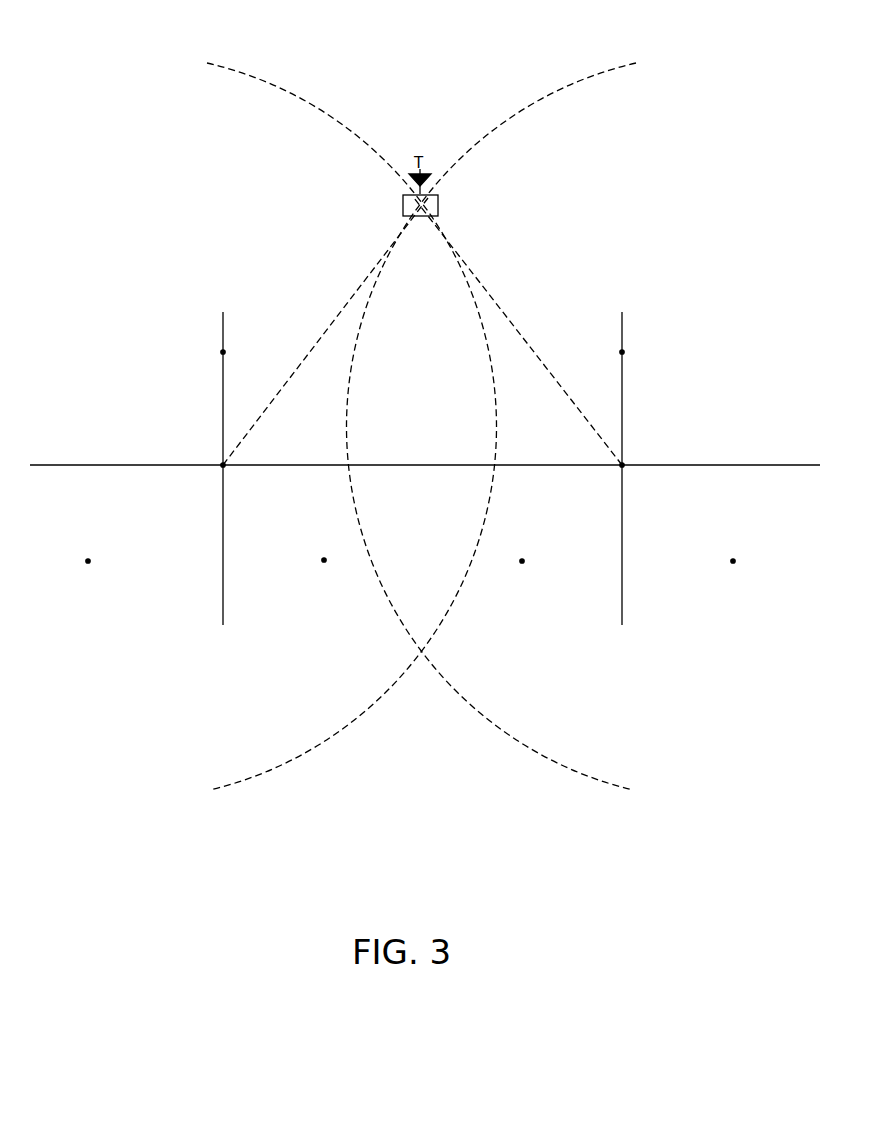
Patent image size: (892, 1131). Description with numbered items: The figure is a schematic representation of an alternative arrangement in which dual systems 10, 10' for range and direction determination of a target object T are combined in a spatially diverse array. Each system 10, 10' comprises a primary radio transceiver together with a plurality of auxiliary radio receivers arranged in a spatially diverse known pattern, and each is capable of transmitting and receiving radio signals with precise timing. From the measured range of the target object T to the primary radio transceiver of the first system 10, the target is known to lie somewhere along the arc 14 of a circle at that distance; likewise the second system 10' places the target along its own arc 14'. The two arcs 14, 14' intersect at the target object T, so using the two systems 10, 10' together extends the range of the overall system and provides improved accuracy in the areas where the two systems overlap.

The arc 14 is at (352, 403).
The arc 14' is at (491, 401).
The system 10 is at (244, 411).
The system 10' is at (598, 411).